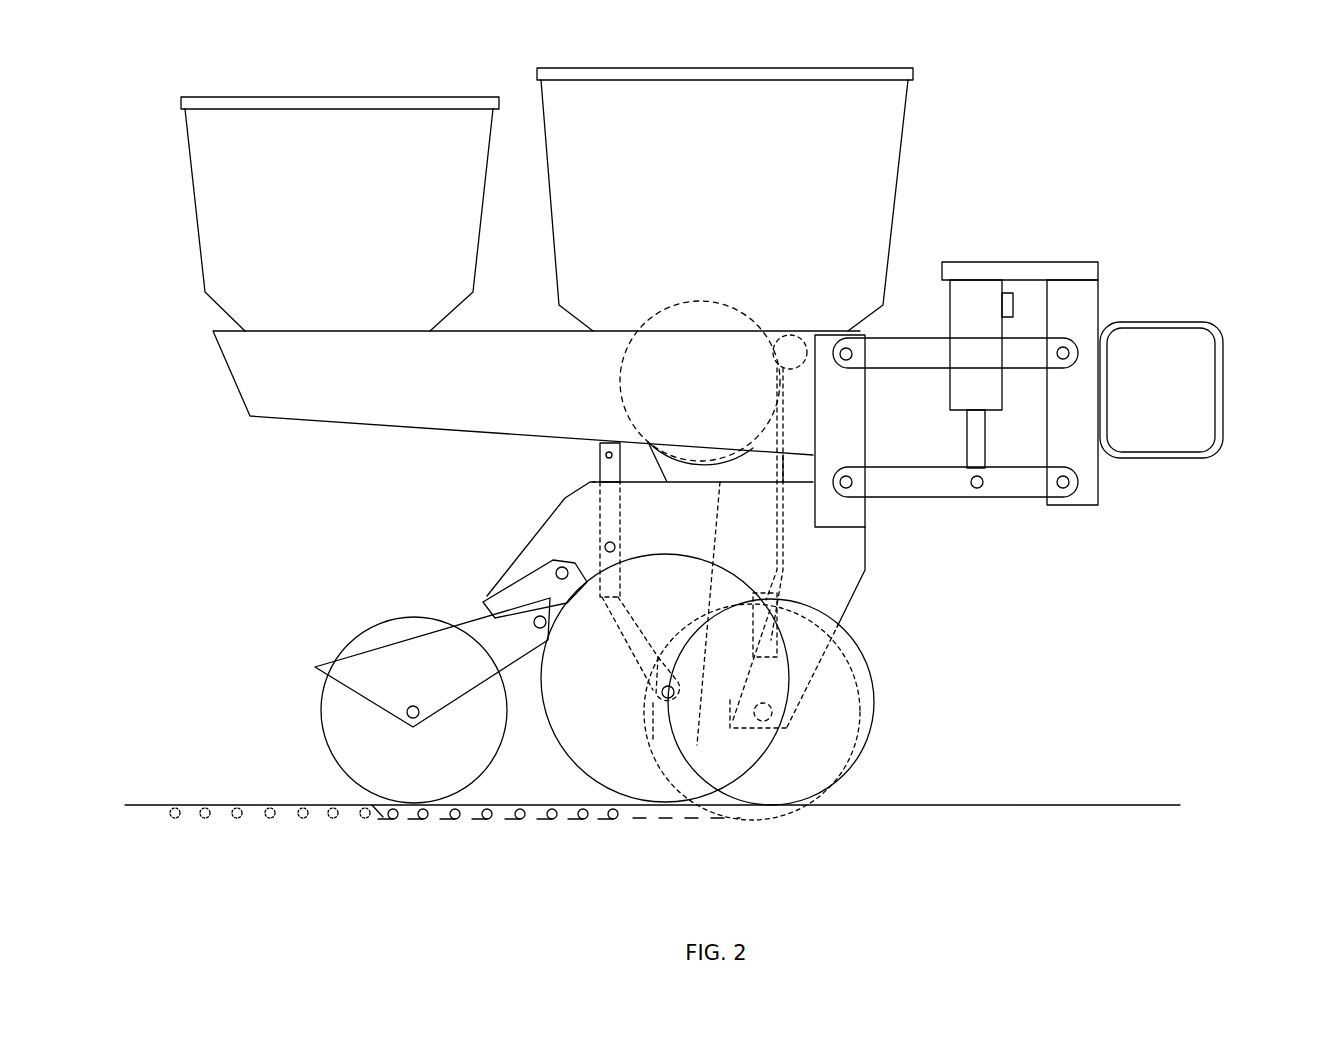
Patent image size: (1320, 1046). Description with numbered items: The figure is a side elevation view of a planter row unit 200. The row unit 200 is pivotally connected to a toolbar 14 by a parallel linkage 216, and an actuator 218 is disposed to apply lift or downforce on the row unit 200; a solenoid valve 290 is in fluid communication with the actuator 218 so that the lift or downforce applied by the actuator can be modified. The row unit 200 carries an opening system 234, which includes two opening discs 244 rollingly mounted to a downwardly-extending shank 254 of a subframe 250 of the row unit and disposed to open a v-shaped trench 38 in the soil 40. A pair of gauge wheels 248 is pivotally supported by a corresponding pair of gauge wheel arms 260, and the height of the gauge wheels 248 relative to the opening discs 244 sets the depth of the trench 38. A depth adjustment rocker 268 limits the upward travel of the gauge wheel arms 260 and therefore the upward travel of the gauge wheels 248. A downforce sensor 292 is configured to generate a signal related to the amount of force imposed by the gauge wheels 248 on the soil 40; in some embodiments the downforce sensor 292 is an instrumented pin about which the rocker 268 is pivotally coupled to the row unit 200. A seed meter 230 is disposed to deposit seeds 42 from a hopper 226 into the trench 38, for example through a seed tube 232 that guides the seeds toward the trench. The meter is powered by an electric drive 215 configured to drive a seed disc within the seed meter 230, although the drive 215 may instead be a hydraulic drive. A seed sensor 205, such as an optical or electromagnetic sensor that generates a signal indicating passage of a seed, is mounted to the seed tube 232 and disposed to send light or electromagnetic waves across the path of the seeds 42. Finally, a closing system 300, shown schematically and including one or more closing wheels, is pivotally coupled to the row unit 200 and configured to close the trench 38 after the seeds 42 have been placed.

The row unit 200 is at (973, 163).
The hopper 226 is at (714, 200).
The electric drive 215 is at (807, 317).
The solenoid valve 290 is at (1005, 292).
The actuator 218 is at (957, 315).
The toolbar 14 is at (1224, 398).
The seed meter 230 is at (622, 405).
The subframe 250 is at (565, 495).
The depth adjustment rocker 268 is at (598, 530).
The downforce sensor 292 is at (613, 542).
The seed tube 232 is at (731, 545).
The parallel linkage 216 is at (1016, 495).
The gauge wheel arms 260 is at (485, 598).
The shank 254 is at (857, 587).
The closing system 300 is at (294, 655).
The gauge wheels 248 is at (576, 722).
The seed sensor 205 is at (880, 667).
The opening system 234 is at (950, 668).
The opening discs 244 is at (795, 778).
The soil 40 is at (1072, 804).
The seeds 42 is at (572, 822).
The trench 38 is at (663, 822).